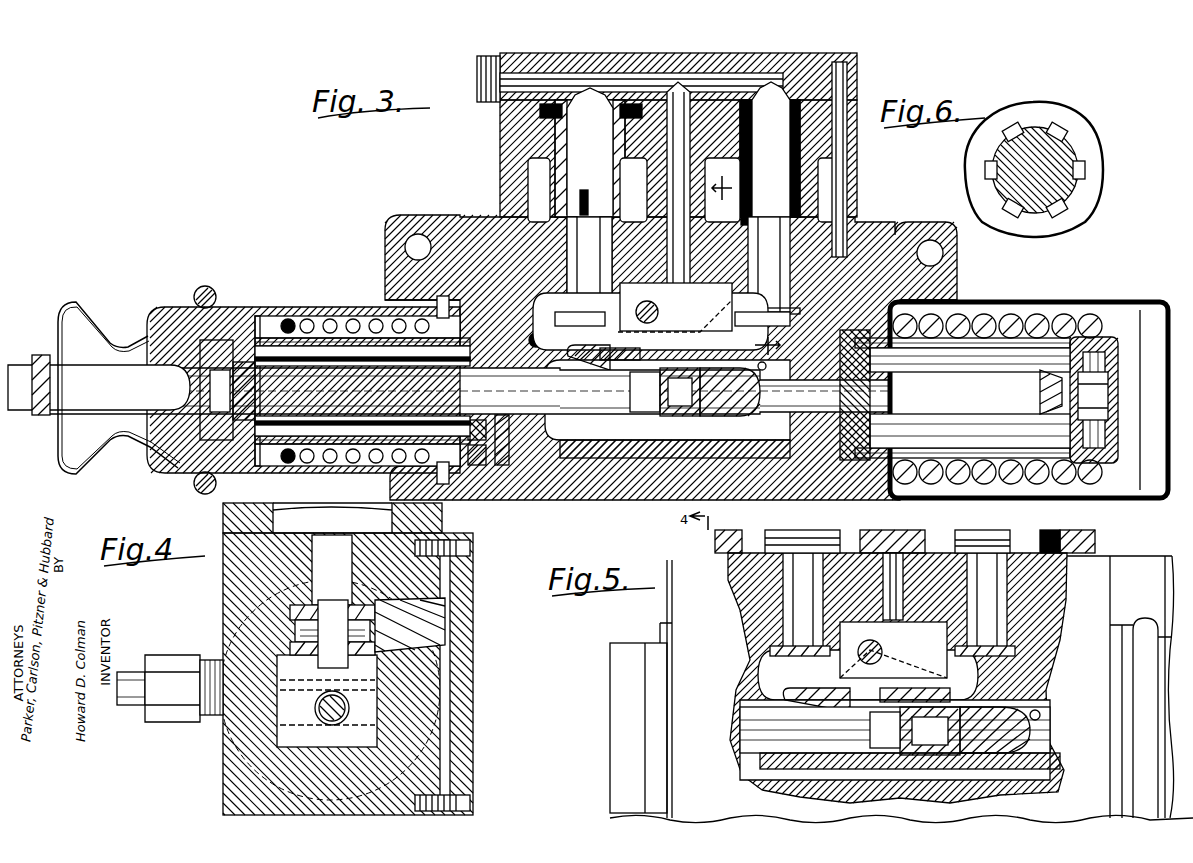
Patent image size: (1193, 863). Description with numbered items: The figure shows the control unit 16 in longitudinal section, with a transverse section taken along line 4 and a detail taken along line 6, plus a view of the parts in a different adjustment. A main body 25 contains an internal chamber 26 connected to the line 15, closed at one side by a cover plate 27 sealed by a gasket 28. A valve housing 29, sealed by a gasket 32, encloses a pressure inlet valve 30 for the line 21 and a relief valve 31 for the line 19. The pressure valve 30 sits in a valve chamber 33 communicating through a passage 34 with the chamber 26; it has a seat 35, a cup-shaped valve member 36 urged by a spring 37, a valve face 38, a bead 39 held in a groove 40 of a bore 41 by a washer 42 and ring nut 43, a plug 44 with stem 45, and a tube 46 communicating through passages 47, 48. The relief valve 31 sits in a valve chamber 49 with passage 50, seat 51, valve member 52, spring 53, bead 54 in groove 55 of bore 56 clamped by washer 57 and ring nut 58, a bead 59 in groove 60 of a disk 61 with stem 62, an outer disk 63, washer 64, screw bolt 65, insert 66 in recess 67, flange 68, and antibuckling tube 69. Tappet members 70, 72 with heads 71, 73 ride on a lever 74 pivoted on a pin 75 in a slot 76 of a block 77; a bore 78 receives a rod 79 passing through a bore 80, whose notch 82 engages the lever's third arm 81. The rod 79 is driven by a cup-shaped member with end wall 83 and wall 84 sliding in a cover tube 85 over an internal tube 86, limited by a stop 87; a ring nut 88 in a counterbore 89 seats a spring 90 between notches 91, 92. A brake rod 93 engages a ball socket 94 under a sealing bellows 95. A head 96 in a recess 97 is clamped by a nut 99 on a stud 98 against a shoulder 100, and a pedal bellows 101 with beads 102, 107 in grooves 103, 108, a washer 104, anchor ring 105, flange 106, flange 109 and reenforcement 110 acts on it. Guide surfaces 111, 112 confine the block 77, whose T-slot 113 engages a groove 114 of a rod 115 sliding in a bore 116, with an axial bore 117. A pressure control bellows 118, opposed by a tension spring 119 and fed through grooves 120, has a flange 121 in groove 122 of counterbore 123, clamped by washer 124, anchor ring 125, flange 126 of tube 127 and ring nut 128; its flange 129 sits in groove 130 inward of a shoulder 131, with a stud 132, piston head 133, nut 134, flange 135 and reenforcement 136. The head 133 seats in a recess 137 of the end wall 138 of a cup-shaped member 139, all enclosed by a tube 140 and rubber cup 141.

In FIG. 3, the section line 4— 4 is at (722, 190).
In FIG. 3, the section line 6— 6 is at (767, 345).
In FIG. 3, the line 15 is at (661, 366).
In FIG. 4, the line 15 is at (130, 672).
In FIG. 5, the line 15 is at (895, 715).
In FIG. 3, the control unit 16 is at (386, 200).
In FIG. 3, the line 19 is at (598, 170).
In FIG. 3, the line 21 is at (770, 149).
In FIG. 3, the main body 25 is at (615, 470).
In FIG. 6, the main body 25 is at (1095, 140).
In FIG. 4, the main body 25 is at (225, 752).
In FIG. 5, the main body 25 is at (690, 782).
In FIG. 3, the internal chamber 26 is at (628, 480).
In FIG. 4, the internal chamber 26 is at (380, 742).
In FIG. 5, the internal chamber 26 is at (750, 690).
In FIG. 4, the cover plate 27 is at (466, 690).
In FIG. 4, the gasket 28 is at (445, 790).
In FIG. 3, the valve housing 29 is at (805, 62).
In FIG. 4, the valve housing 29 is at (225, 508).
In FIG. 5, the valve housing 29 is at (1085, 535).
In FIG. 3, the pressure inlet valve 30 is at (840, 212).
In FIG. 5, the pressure inlet valve 30 is at (1045, 540).
In FIG. 3, the relief valve 31 is at (495, 205).
In FIG. 5, the relief valve 31 is at (760, 555).
In FIG. 3, the gasket 32 is at (860, 216).
In FIG. 4, the gasket 32 is at (225, 528).
In FIG. 5, the gasket 32 is at (1075, 548).
In FIG. 3, the valve chamber 33 is at (850, 198).
In FIG. 4, the valve chamber 33 is at (378, 520).
In FIG. 5, the valve chamber 33 is at (940, 540).
In FIG. 3, the valve passage 34 is at (787, 268).
In FIG. 5, the valve passage 34 is at (1010, 592).
In FIG. 3, the annular valve seat 35 is at (748, 225).
In FIG. 5, the annular valve seat 35 is at (1060, 570).
In FIG. 3, the valve member 36 is at (846, 168).
In FIG. 5, the valve member 36 is at (985, 540).
In FIG. 3, the coiled compression spring 37 is at (752, 100).
In FIG. 3, the valve face 38 is at (750, 230).
In FIG. 3, the peripheral bead 39 is at (848, 90).
In FIG. 3, the annular groove 40 is at (855, 70).
In FIG. 3, the closed bore 41 is at (852, 140).
In FIG. 3, the washer 42 is at (845, 128).
In FIG. 3, the ring nut 43 is at (846, 156).
In FIG. 3, the circular plug 44 is at (792, 250).
In FIG. 3, the axial stem 45 is at (840, 184).
In FIG. 3, the tube 46 is at (812, 70).
In FIG. 3, the passage 47 is at (771, 82).
In FIG. 3, the passage 48 is at (685, 100).
In FIG. 5, the passage 48 is at (893, 540).
In FIG. 3, the valve chamber 49 is at (500, 182).
In FIG. 5, the valve chamber 49 is at (715, 540).
In FIG. 3, the valve passage 50 is at (570, 256).
In FIG. 5, the valve passage 50 is at (770, 598).
In FIG. 3, the annular valve seat 51 is at (560, 238).
In FIG. 5, the annular valve seat 51 is at (760, 575).
In FIG. 3, the valve member 52 is at (568, 120).
In FIG. 3, the coiled compression spring 53 is at (620, 168).
In FIG. 3, the peripheral bead 54 is at (540, 112).
In FIG. 3, the annular groove 55 is at (560, 70).
In FIG. 3, the bore 56 is at (535, 146).
In FIG. 3, the washer 57 is at (545, 130).
In FIG. 3, the ring nut 58 is at (535, 160).
In FIG. 3, the bead 59 is at (592, 190).
In FIG. 3, the annular groove 60 is at (584, 192).
In FIG. 3, the disk 61 is at (530, 192).
In FIG. 3, the axial stem 62 is at (540, 170).
In FIG. 3, the outer disk 63 is at (634, 195).
In FIG. 5, the outer disk 63 is at (856, 540).
In FIG. 3, the washer 64 is at (601, 259).
In FIG. 5, the washer 64 is at (765, 585).
In FIG. 3, the screw bolt 65 is at (574, 259).
In FIG. 3, the insert 66 is at (630, 253).
In FIG. 3, the annular recess 67 is at (614, 222).
In FIG. 3, the annular flange 68 is at (634, 181).
In FIG. 3, the antibuckling tube 69 is at (672, 85).
In FIG. 5, the antibuckling tube 69 is at (782, 535).
In FIG. 3, the lifter tappet member 70 is at (792, 280).
In FIG. 5, the lifter tappet member 70 is at (1005, 608).
In FIG. 3, the abutment head 71 is at (770, 312).
In FIG. 5, the abutment head 71 is at (1000, 656).
In FIG. 3, the lifter tappet member 72 is at (575, 270).
In FIG. 5, the lifter tappet member 72 is at (785, 610).
In FIG. 3, the abutment head 73 is at (594, 320).
In FIG. 5, the abutment head 73 is at (770, 640).
In FIG. 3, the pivotal lever 74 is at (688, 325).
In FIG. 4, the pivotal lever 74 is at (315, 612).
In FIG. 5, the pivotal lever 74 is at (960, 672).
In FIG. 3, the pin 75 is at (658, 305).
In FIG. 4, the pin 75 is at (360, 630).
In FIG. 5, the pin 75 is at (885, 640).
In FIG. 3, the slot 76 is at (580, 350).
In FIG. 4, the slot 76 is at (300, 670).
In FIG. 5, the slot 76 is at (945, 690).
In FIG. 3, the movable block 77 is at (620, 354).
In FIG. 4, the movable block 77 is at (370, 683).
In FIG. 5, the movable block 77 is at (950, 700).
In FIG. 3, the bore 78 is at (555, 391).
In FIG. 3, the rod 79 is at (674, 455).
In FIG. 5, the rod 79 is at (755, 730).
In FIG. 3, the bore 80 is at (525, 362).
In FIG. 5, the bore 80 is at (770, 765).
In FIG. 3, the third arm 81 is at (630, 384).
In FIG. 5, the third arm 81 is at (830, 712).
In FIG. 3, the peripheral notch 82 is at (668, 390).
In FIG. 5, the peripheral notch 82 is at (880, 720).
In FIG. 3, the end wall 83 is at (155, 445).
In FIG. 3, the cylindrical wall 84 is at (270, 300).
In FIG. 3, the cover tube 85 is at (320, 318).
In FIG. 5, the cover tube 85 is at (635, 650).
In FIG. 3, the internal tube 86 is at (368, 318).
In FIG. 3, the stop 87 is at (178, 314).
In FIG. 3, the ring nut 88 is at (480, 445).
In FIG. 3, the counterbore 89 is at (474, 466).
In FIG. 3, the coiled compression spring 90 is at (338, 318).
In FIG. 3, the centering notch 91 is at (432, 320).
In FIG. 3, the centering notch 92 is at (290, 318).
In FIG. 3, the brake rod 93 is at (108, 364).
In FIG. 3, the ball socket 94 is at (168, 456).
In FIG. 3, the sealing bellows 95 is at (105, 320).
In FIG. 3, the head 96 is at (225, 420).
In FIG. 3, the recess 97 is at (192, 474).
In FIG. 3, the axial stud 98 is at (240, 300).
In FIG. 3, the nut 99 is at (205, 378).
In FIG. 3, the annular shoulder 100 is at (360, 372).
In FIG. 3, the pedal bellows 101 is at (410, 342).
In FIG. 3, the bead 102 is at (532, 334).
In FIG. 3, the annular groove 103 is at (548, 310).
In FIG. 3, the washer 104 is at (596, 500).
In FIG. 3, the anchor ring 105 is at (548, 495).
In FIG. 3, the annular flange 106 is at (505, 470).
In FIG. 3, the bead 107 is at (395, 362).
In FIG. 3, the annular groove 108 is at (258, 378).
In FIG. 3, the annular flange 109 is at (258, 340).
In FIG. 3, the tubular reenforcement 110 is at (275, 432).
In FIG. 4, the guide surface 111 is at (445, 632).
In FIG. 4, the guide surface 112 is at (300, 630).
In FIG. 3, the T-slot 113 is at (700, 420).
In FIG. 4, the T-slot 113 is at (355, 700).
In FIG. 5, the T-slot 113 is at (918, 760).
In FIG. 3, the annular groove 114 is at (716, 418).
In FIG. 4, the annular groove 114 is at (350, 708).
In FIG. 5, the annular groove 114 is at (950, 760).
In FIG. 3, the rod 115 is at (752, 416).
In FIG. 6, the rod 115 is at (1060, 148).
In FIG. 4, the rod 115 is at (360, 725).
In FIG. 5, the rod 115 is at (1035, 755).
In FIG. 3, the bore 116 is at (768, 366).
In FIG. 6, the bore 116 is at (1080, 192).
In FIG. 5, the bore 116 is at (1040, 716).
In FIG. 3, the axial bore 117 is at (762, 386).
In FIG. 5, the axial bore 117 is at (1035, 720).
In FIG. 3, the pressure control bellows 118 is at (939, 391).
In FIG. 3, the coiled tension spring 119 is at (1040, 340).
In FIG. 3, the longitudinal grooves 120 is at (850, 440).
In FIG. 6, the longitudinal grooves 120 is at (1058, 128).
In FIG. 5, the longitudinal grooves 120 is at (1020, 760).
In FIG. 3, the peripheral flange 121 is at (805, 342).
In FIG. 3, the annular groove 122 is at (832, 302).
In FIG. 3, the counterbore 123 is at (875, 335).
In FIG. 3, the washer 124 is at (858, 450).
In FIG. 3, the anchor ring 125 is at (870, 490).
In FIG. 3, the flange 126 is at (884, 490).
In FIG. 3, the tube 127 is at (972, 420).
In FIG. 3, the ring nut 128 is at (880, 345).
In FIG. 3, the internal flange 129 is at (1060, 497).
In FIG. 3, the annular groove 130 is at (1040, 390).
In FIG. 3, the shoulder 131 is at (1030, 396).
In FIG. 3, the axial stud 132 is at (1080, 450).
In FIG. 3, the piston head 133 is at (1085, 352).
In FIG. 3, the nut 134 is at (1108, 412).
In FIG. 3, the annular flange 135 is at (1090, 315).
In FIG. 3, the reenforcement 136 is at (895, 360).
In FIG. 3, the circular recess 137 is at (1105, 355).
In FIG. 3, the end wall 138 is at (1108, 382).
In FIG. 3, the cup-shaped member 139 is at (1065, 315).
In FIG. 3, the tube 140 is at (1158, 302).
In FIG. 3, the rubber cup 141 is at (1015, 305).
In FIG. 5, the rubber cup 141 is at (1168, 612).